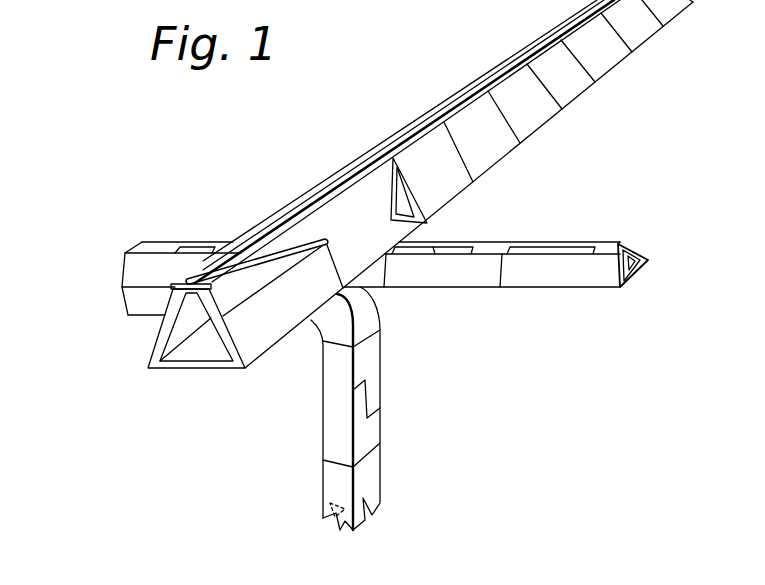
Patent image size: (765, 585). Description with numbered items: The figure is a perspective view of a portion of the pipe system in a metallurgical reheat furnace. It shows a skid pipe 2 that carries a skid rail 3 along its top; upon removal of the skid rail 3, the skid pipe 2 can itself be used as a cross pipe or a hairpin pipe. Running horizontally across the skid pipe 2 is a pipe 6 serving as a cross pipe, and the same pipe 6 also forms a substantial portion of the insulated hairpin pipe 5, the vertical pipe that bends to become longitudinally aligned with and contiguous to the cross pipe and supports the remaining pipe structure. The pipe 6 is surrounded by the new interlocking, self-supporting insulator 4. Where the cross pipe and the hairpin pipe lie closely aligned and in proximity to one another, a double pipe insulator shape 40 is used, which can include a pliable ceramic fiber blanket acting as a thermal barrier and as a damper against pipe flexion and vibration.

The skid pipe 2 is at (186, 372).
The skid rail 3 is at (392, 138).
The interlocking, self-supporting insulator 4 is at (372, 365).
The insulated hairpin pipe 5 is at (380, 425).
The pipe 6 is at (641, 256).
The double pipe insulator shape 40 is at (132, 267).